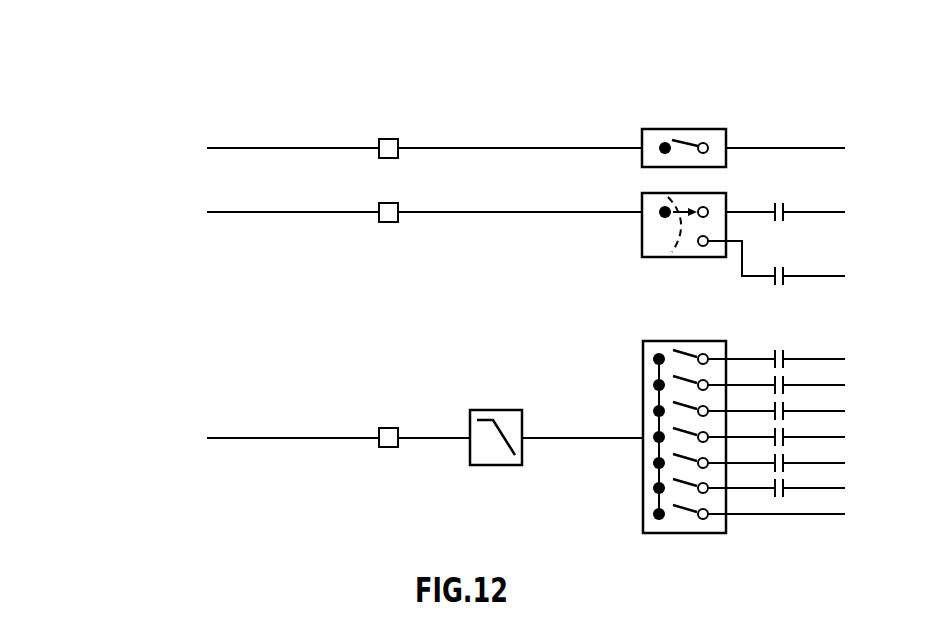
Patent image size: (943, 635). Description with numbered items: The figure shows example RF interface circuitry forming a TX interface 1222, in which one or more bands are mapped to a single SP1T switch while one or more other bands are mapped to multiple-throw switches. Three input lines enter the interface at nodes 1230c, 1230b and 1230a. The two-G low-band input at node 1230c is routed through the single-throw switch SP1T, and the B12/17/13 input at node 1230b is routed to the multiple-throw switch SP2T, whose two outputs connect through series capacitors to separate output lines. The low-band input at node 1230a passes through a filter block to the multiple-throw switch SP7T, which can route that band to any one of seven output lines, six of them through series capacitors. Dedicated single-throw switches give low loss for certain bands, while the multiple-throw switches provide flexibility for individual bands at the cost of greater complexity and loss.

The TX interface 1222 is at (540, 104).
The input node (LB RF in) 1230a is at (382, 472).
The input node (B12/17/13 RF in) 1230b is at (381, 230).
The input node (2G LB RF in) 1230c is at (381, 166).
The single-pole single-throw switch SP1T is at (710, 118).
The single-pole double-throw switch SP2T is at (672, 270).
The single-pole seven-throw switch SP7T is at (688, 548).